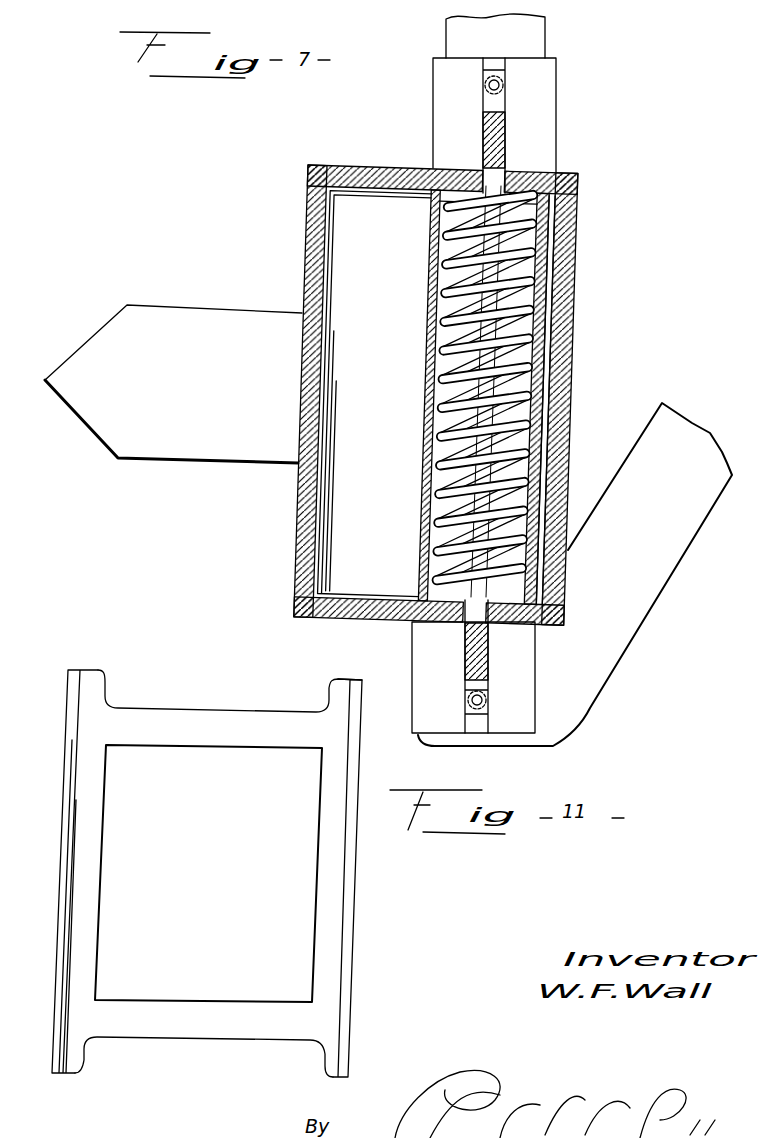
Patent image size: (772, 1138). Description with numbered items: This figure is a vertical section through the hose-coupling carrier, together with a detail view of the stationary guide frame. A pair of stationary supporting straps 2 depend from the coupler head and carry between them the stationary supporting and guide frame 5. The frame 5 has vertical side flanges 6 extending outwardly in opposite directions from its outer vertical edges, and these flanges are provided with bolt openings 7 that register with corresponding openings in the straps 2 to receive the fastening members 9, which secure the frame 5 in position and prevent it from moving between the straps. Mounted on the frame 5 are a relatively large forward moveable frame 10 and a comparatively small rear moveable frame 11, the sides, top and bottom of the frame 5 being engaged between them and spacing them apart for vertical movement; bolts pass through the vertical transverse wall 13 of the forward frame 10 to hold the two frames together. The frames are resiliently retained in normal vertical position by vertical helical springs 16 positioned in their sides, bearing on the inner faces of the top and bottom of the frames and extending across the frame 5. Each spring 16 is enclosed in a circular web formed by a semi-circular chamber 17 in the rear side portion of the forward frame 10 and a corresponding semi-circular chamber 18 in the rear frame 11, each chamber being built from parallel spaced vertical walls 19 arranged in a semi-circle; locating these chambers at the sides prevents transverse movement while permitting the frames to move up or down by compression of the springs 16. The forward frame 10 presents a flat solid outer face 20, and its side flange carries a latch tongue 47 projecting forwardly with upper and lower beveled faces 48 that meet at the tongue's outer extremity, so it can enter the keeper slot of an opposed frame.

In FIG. 7, the stationary supporting strap 2 is at (527, 37).
In FIG. 7, the stationary supporting and guide frame 5 is at (508, 128).
In FIG. 11, the stationary supporting and guide frame 5 is at (160, 718).
In FIG. 7, the vertical side flange 6 is at (447, 133).
In FIG. 11, the vertical side flange 6 is at (68, 760).
In FIG. 7, the bolt opening 7 is at (500, 90).
In FIG. 7, the fastening member 9 is at (487, 87).
In FIG. 7, the forward moveable frame 10 is at (333, 164).
In FIG. 7, the rear moveable frame 11 is at (525, 625).
In FIG. 7, the vertical transverse wall 13 is at (548, 600).
In FIG. 7, the vertical helical spring 16 is at (530, 325).
In FIG. 7, the semi-circular chamber 17 is at (545, 425).
In FIG. 7, the semi-circular chamber 18 is at (492, 395).
In FIG. 7, the parallel spaced vertical wall 19 is at (432, 290).
In FIG. 7, the flat solid outer face 20 is at (305, 253).
In FIG. 7, the latch tongue 47 is at (128, 313).
In FIG. 7, the beveled face 48 is at (58, 386).